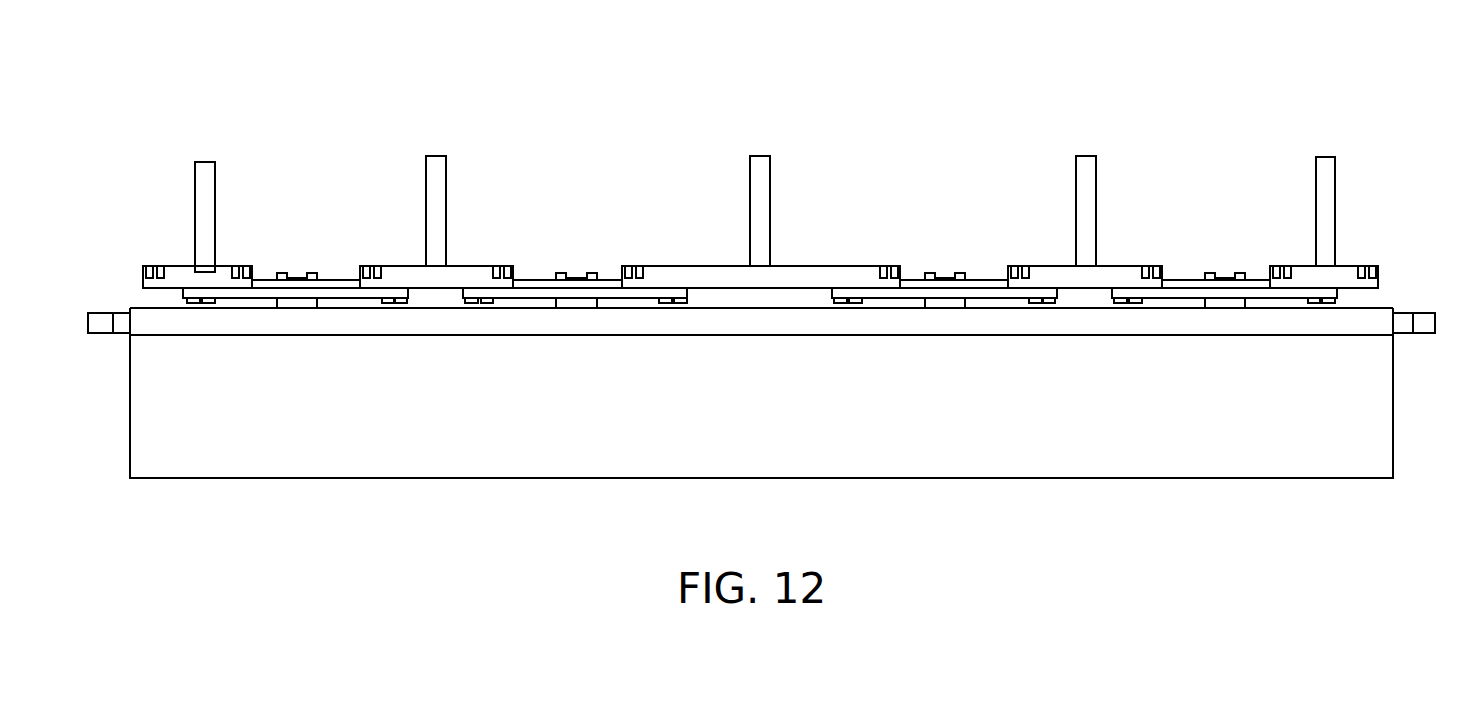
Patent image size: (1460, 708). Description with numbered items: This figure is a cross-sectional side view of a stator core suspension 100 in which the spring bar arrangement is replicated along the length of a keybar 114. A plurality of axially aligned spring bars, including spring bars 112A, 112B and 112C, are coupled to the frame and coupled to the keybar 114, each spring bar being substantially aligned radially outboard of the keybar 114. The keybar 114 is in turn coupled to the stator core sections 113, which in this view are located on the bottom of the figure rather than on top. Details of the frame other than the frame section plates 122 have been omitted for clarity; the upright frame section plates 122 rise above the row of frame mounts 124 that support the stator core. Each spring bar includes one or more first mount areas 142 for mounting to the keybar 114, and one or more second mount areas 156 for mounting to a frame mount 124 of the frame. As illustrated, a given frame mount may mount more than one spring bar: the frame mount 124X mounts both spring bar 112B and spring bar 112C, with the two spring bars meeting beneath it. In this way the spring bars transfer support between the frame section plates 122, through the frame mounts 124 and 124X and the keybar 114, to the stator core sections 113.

The substrate carrier assembly 100 is at (310, 112).
The spring bar 112A is at (263, 288).
The spring bar 112B is at (530, 288).
The spring bar 112C is at (922, 290).
The stator core section 113 is at (763, 437).
The keybar 114 is at (1362, 318).
The frame section plate 122 is at (437, 172).
The frame mount 124 is at (182, 280).
The frame mount 124X is at (703, 280).
The first mount area 142 is at (571, 330).
The second mount area 156 is at (1350, 248).